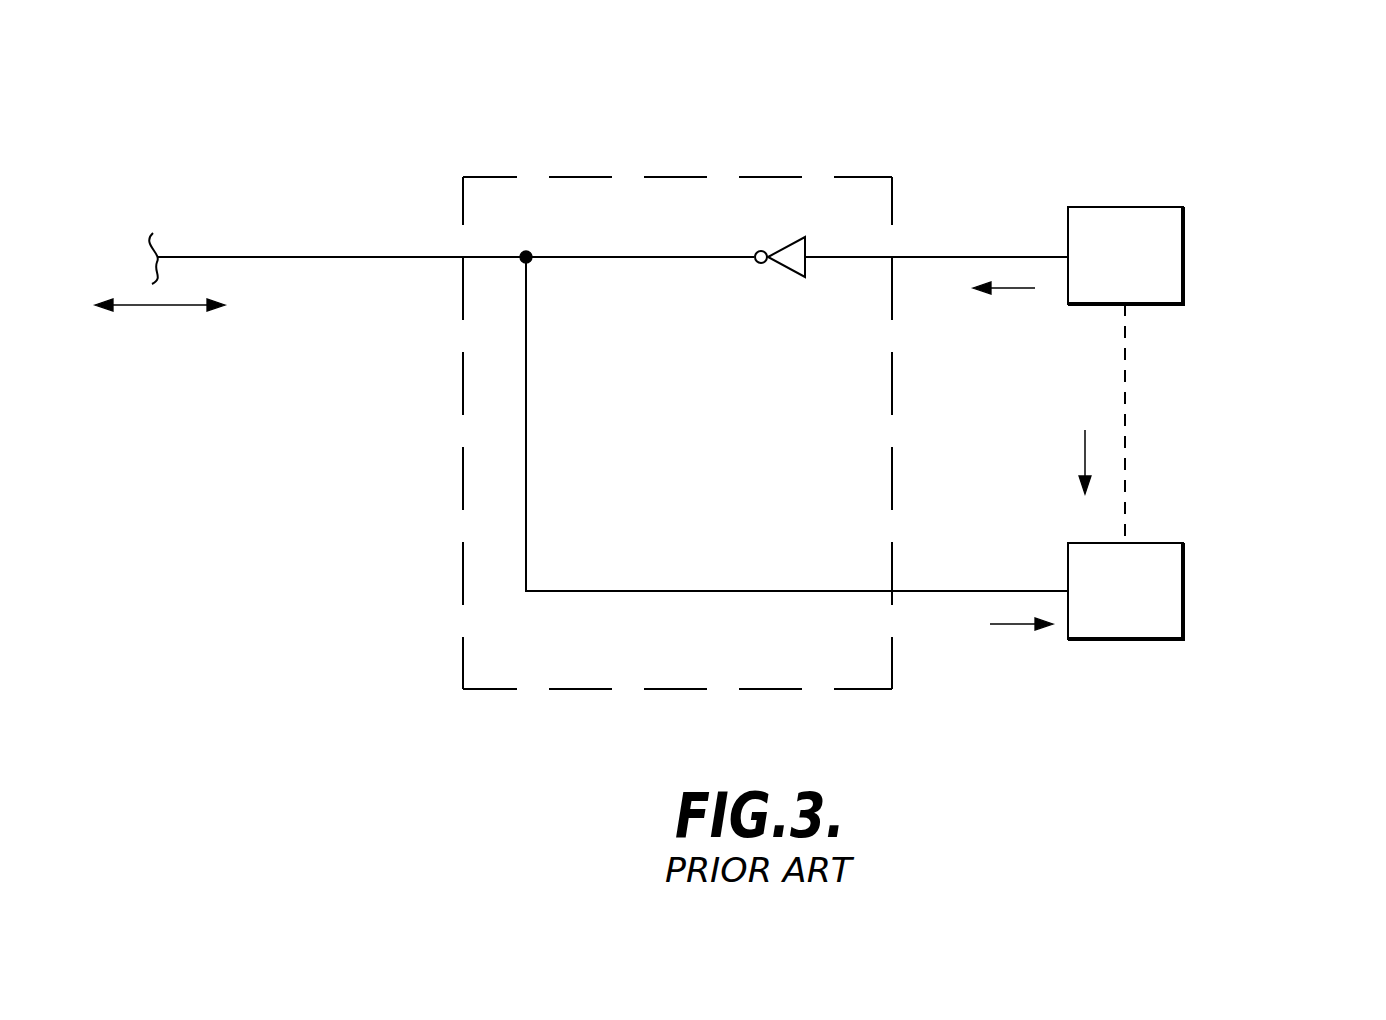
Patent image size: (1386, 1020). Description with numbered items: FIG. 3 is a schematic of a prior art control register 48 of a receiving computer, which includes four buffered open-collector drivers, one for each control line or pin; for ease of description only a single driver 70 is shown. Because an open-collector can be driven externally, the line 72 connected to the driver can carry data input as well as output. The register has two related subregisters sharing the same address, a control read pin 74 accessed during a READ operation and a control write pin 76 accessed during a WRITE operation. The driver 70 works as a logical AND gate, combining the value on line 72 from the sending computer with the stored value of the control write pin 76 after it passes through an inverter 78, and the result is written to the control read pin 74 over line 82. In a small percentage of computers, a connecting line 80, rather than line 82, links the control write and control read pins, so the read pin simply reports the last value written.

The control register 48 is at (1046, 128).
The driver 70 is at (678, 177).
The line 72 is at (250, 257).
The control read pin 74 is at (1183, 628).
The control write pin 76 is at (1183, 293).
The inverter 78 is at (805, 265).
The connecting line 80 is at (1128, 415).
The line 82 is at (770, 590).